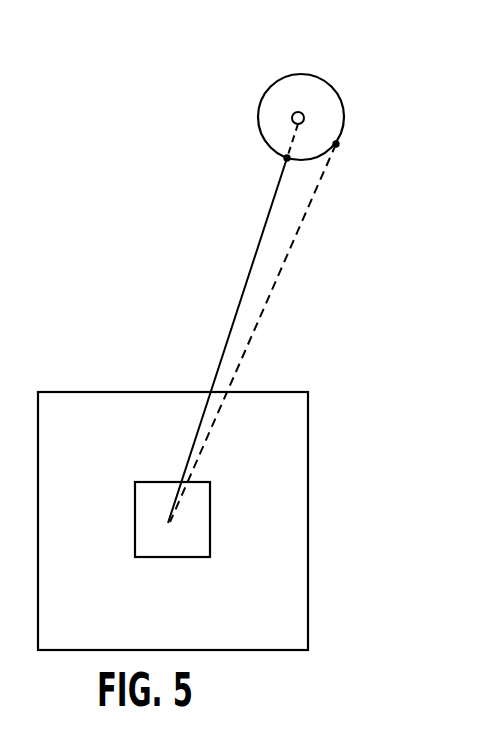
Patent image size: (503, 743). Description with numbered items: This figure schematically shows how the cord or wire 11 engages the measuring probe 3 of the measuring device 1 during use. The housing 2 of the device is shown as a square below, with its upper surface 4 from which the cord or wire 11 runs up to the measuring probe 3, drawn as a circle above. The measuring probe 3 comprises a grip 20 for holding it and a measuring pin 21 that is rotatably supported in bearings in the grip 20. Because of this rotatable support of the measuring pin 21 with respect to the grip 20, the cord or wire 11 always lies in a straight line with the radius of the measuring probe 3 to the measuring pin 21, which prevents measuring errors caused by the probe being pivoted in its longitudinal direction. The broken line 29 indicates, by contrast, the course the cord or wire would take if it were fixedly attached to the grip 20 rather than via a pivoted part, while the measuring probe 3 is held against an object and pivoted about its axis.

The measuring device 1 is at (116, 365).
The housing 2 is at (73, 530).
The measuring probe 3 is at (313, 93).
The upper surface 4 is at (148, 505).
The cord or wire 11 is at (270, 212).
The grip 20 is at (341, 99).
The measuring pin 21 is at (293, 115).
The broken line 29 is at (282, 272).